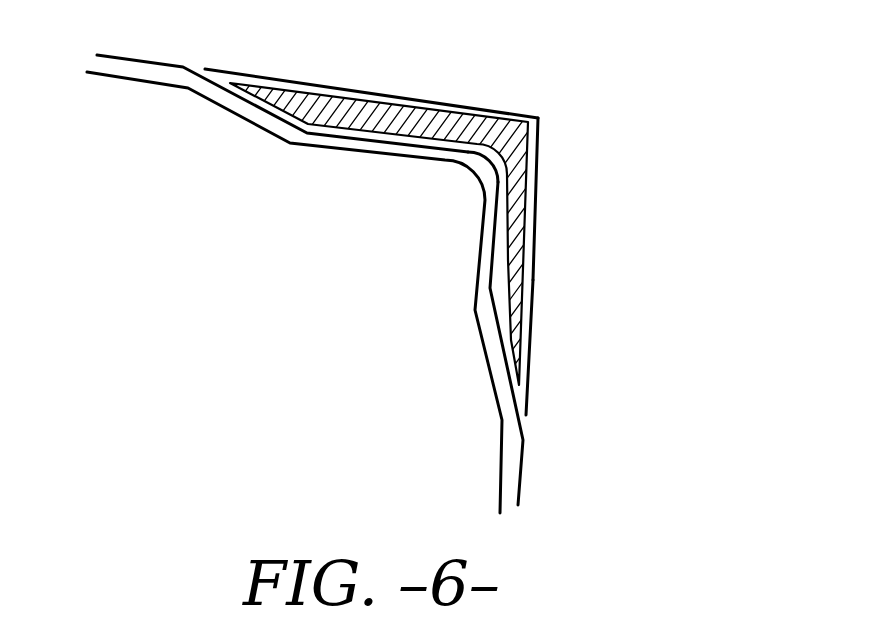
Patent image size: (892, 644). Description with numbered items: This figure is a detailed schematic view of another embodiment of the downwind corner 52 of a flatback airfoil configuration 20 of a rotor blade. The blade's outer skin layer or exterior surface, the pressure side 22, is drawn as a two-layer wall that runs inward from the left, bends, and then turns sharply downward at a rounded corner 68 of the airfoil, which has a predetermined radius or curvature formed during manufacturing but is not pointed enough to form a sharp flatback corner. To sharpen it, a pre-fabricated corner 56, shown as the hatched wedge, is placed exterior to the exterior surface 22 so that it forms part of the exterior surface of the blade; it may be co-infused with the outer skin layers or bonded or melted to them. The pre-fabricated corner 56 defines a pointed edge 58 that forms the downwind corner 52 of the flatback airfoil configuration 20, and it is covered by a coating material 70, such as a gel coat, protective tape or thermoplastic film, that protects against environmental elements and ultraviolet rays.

The flatback airfoil configuration 20 is at (690, 135).
The pressure side 22 is at (157, 57).
The downwind corner 52 is at (552, 128).
The pre-fabricated corner 56 is at (432, 96).
The pointed edge 58 is at (540, 118).
The corner of the airfoil 68 is at (465, 183).
The coating material 70 is at (533, 285).